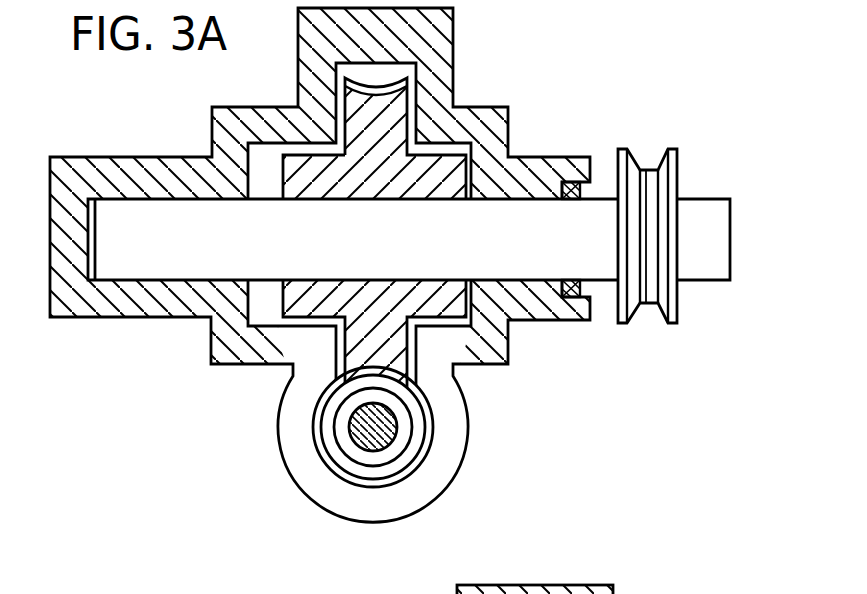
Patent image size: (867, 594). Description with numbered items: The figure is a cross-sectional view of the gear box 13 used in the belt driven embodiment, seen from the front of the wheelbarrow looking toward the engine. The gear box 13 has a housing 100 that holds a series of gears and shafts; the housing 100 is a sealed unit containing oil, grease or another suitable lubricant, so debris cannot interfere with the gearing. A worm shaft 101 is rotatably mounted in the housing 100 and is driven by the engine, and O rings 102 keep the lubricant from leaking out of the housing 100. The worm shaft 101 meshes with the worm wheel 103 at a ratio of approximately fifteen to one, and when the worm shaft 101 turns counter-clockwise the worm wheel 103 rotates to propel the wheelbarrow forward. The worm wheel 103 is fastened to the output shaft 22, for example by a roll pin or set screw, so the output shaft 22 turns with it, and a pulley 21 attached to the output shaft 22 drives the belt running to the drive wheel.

The gear box 13 is at (407, 265).
The housing 100 is at (443, 50).
The worm shaft 101 is at (335, 452).
The O rings 102 is at (572, 184).
The worm wheel 103 is at (437, 165).
The pulley 21 is at (665, 170).
The output shaft 22 is at (715, 208).